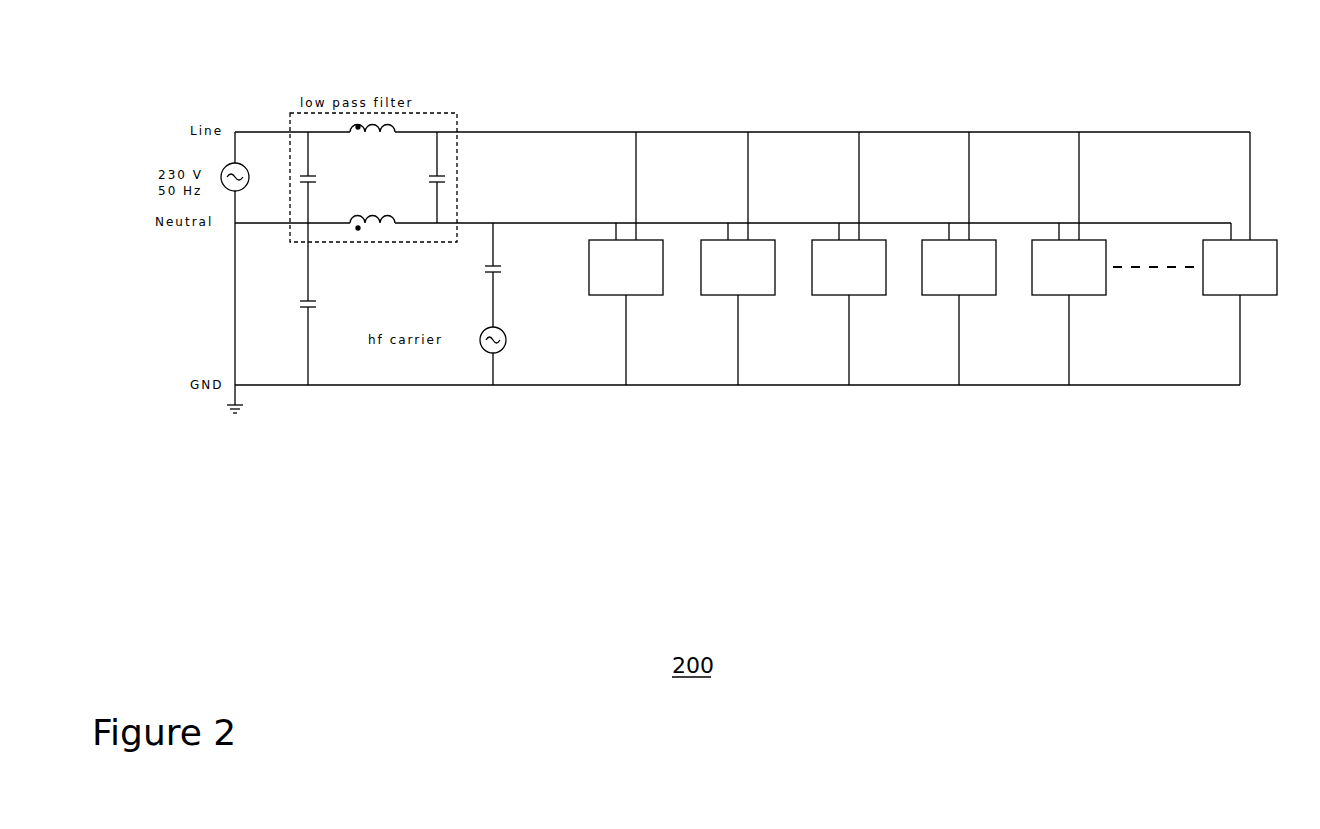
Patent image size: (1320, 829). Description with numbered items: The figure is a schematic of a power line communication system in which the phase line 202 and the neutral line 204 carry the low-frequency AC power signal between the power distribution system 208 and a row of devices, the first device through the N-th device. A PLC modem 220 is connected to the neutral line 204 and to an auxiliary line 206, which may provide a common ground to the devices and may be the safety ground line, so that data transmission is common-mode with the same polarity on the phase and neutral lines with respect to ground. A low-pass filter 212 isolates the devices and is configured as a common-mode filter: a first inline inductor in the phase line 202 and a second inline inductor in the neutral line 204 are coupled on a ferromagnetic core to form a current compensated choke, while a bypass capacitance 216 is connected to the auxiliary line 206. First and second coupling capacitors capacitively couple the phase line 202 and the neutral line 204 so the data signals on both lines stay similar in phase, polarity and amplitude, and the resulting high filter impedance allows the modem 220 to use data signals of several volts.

The phase line 202 is at (1113, 128).
The neutral line 204 is at (1113, 222).
The auxiliary line 206 is at (1113, 386).
The power distribution system 208 is at (207, 158).
The low-pass filter 212 is at (460, 115).
The bypass capacitance 216 is at (337, 304).
The PLC modem 220 is at (522, 304).